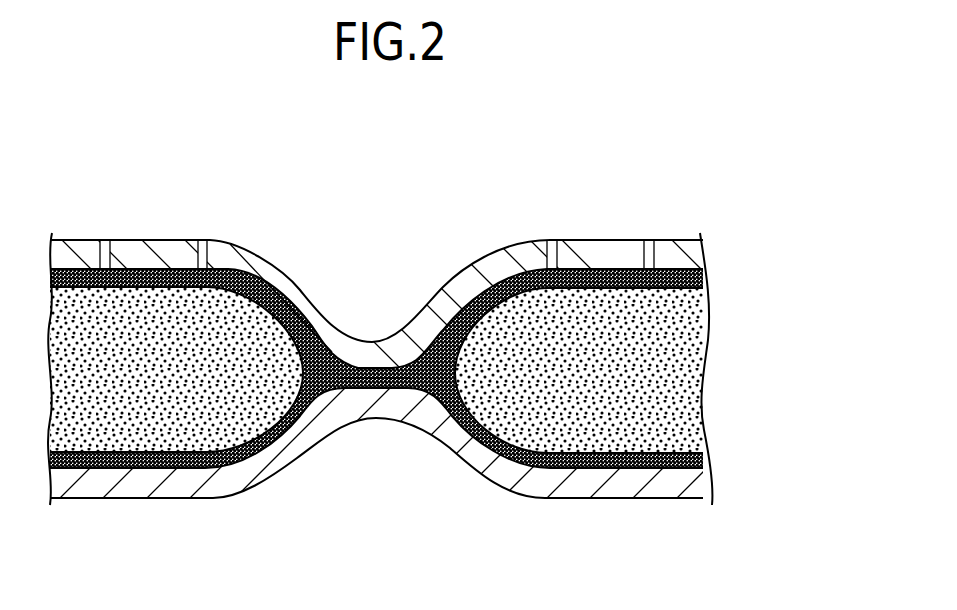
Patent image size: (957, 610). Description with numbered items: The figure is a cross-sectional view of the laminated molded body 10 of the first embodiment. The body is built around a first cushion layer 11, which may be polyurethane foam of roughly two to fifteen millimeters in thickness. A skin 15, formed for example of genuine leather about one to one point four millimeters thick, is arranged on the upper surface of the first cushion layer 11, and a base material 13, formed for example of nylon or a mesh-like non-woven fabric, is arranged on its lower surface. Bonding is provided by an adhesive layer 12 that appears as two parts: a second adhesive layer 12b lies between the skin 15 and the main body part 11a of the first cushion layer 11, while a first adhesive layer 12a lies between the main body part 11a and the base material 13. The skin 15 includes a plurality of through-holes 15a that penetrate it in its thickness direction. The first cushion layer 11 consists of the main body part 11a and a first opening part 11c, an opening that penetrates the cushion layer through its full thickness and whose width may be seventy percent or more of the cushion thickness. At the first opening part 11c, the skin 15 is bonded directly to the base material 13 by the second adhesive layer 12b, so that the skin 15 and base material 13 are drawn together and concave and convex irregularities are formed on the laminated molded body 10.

The laminated molded body 10 is at (469, 192).
The first cushion layer 11 is at (716, 383).
The main body part 11a is at (145, 432).
The first opening part 11c is at (333, 362).
The adhesive layer 12 is at (376, 368).
The first adhesive layer 12a is at (716, 461).
The second adhesive layer 12b is at (714, 277).
The base material 13 is at (718, 484).
The skin 15 is at (710, 252).
The through-holes 15a is at (102, 256).